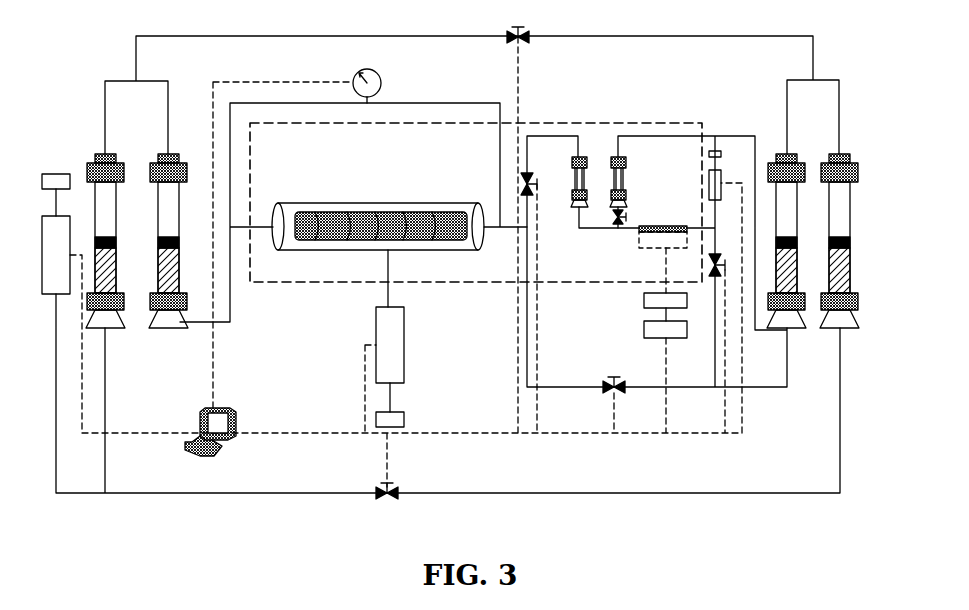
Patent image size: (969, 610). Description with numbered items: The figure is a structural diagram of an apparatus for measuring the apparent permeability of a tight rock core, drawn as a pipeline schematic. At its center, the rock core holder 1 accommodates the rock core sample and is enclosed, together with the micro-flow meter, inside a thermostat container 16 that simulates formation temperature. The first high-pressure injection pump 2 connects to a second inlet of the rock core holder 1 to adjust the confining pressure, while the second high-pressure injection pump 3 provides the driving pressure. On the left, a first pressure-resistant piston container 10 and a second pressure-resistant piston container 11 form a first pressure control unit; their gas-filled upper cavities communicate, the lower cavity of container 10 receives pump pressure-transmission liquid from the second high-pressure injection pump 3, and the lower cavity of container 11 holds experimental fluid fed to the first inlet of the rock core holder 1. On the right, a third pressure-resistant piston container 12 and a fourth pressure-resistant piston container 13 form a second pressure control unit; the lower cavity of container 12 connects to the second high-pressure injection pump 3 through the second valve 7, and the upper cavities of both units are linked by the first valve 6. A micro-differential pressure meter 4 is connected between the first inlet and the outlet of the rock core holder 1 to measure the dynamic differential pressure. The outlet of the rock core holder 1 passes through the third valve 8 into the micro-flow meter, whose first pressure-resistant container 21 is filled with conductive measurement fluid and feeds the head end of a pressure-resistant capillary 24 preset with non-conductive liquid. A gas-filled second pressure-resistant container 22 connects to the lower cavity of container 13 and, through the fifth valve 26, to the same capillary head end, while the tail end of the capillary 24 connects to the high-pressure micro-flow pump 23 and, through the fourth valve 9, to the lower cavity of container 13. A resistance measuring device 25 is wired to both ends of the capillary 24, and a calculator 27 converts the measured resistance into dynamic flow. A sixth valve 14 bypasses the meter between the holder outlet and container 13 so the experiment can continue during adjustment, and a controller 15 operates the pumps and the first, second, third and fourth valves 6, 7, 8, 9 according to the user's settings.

The rock core holder 1 is at (381, 242).
The first high-pressure injection pump 2 is at (404, 342).
The second high-pressure injection pump 3 is at (59, 171).
The micro-differential pressure meter 4 is at (380, 72).
The first valve 6 is at (513, 45).
The second valve 7 is at (401, 489).
The third valve 8 is at (531, 196).
The fourth valve 9 is at (724, 278).
The first pressure-resistant piston container 10 is at (117, 157).
The second pressure-resistant piston container 11 is at (177, 153).
The third pressure-resistant piston container 12 is at (843, 153).
The fourth pressure-resistant piston container 13 is at (790, 155).
The sixth valve 14 is at (605, 393).
The controller 15 is at (242, 430).
The thermostat container 16 is at (298, 284).
The first pressure-resistant container 21 is at (578, 133).
The second pressure-resistant container 22 is at (617, 133).
The high-pressure micro-flow pump 23 is at (722, 172).
The pressure-resistant capillary 24 is at (664, 224).
The resistance measuring device 25 is at (644, 300).
The fifth valve 26 is at (616, 228).
The calculator 27 is at (644, 330).